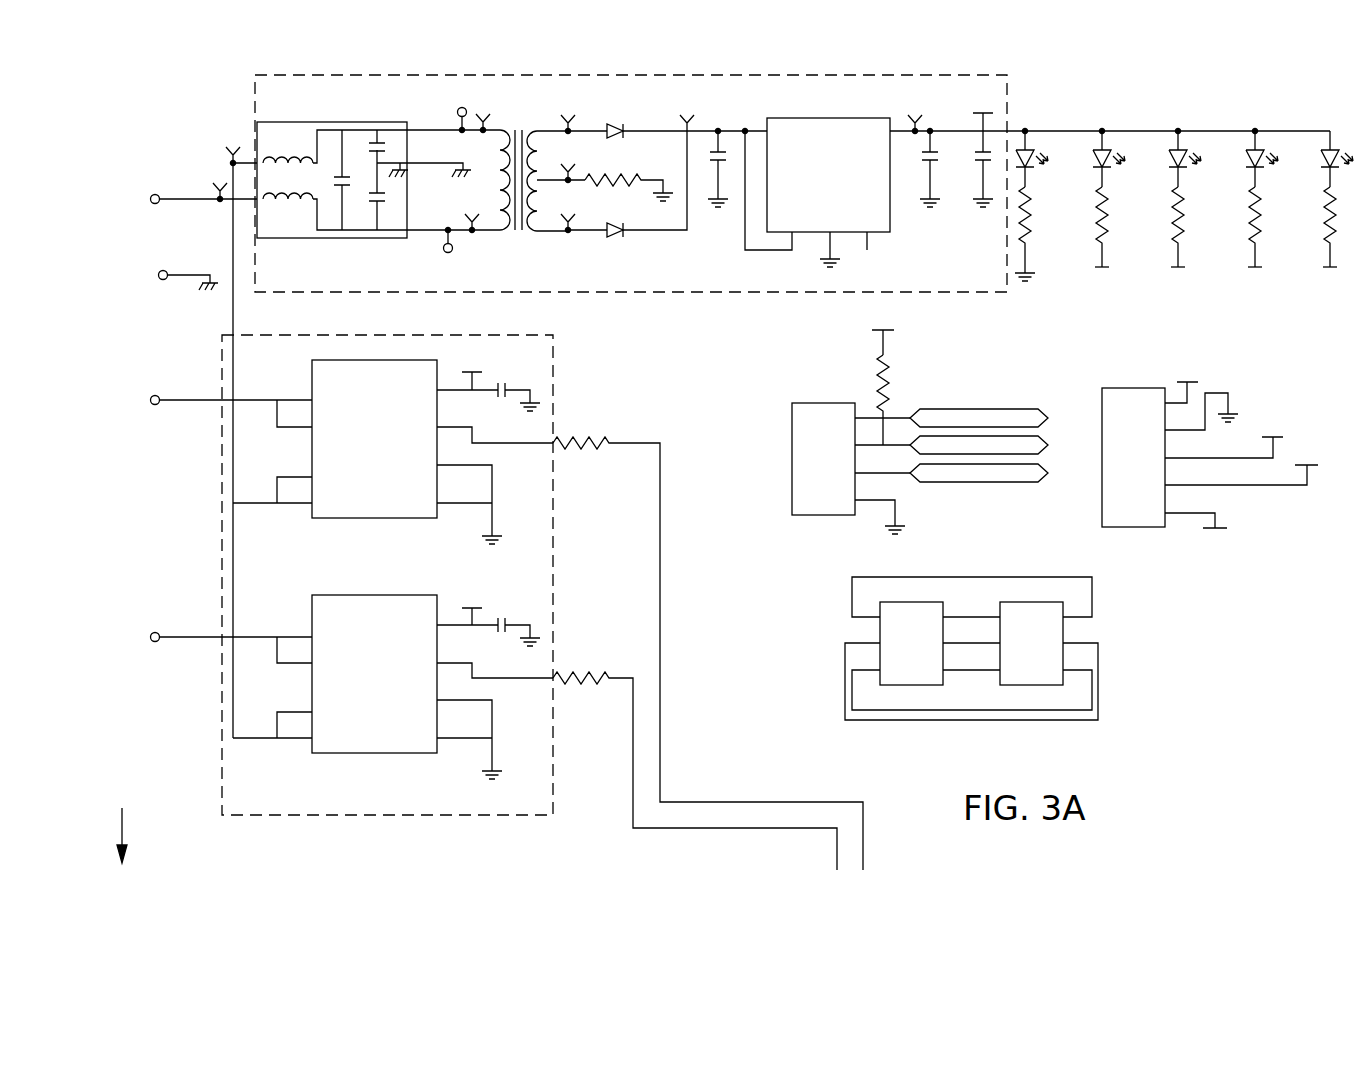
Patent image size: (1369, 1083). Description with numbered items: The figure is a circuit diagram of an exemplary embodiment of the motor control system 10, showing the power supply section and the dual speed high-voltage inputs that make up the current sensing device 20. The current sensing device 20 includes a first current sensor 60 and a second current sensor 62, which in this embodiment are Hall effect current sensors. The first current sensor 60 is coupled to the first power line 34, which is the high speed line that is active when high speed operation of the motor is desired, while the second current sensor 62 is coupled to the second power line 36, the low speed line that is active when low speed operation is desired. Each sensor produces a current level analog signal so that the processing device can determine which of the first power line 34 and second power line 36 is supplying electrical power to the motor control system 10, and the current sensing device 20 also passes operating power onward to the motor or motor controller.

The motor control system 10 is at (1207, 61).
The current sensing device 20 is at (555, 367).
The first power line 34 is at (191, 407).
The second power line 36 is at (191, 643).
The first current sensor 60 is at (310, 372).
The second current sensor 62 is at (310, 609).